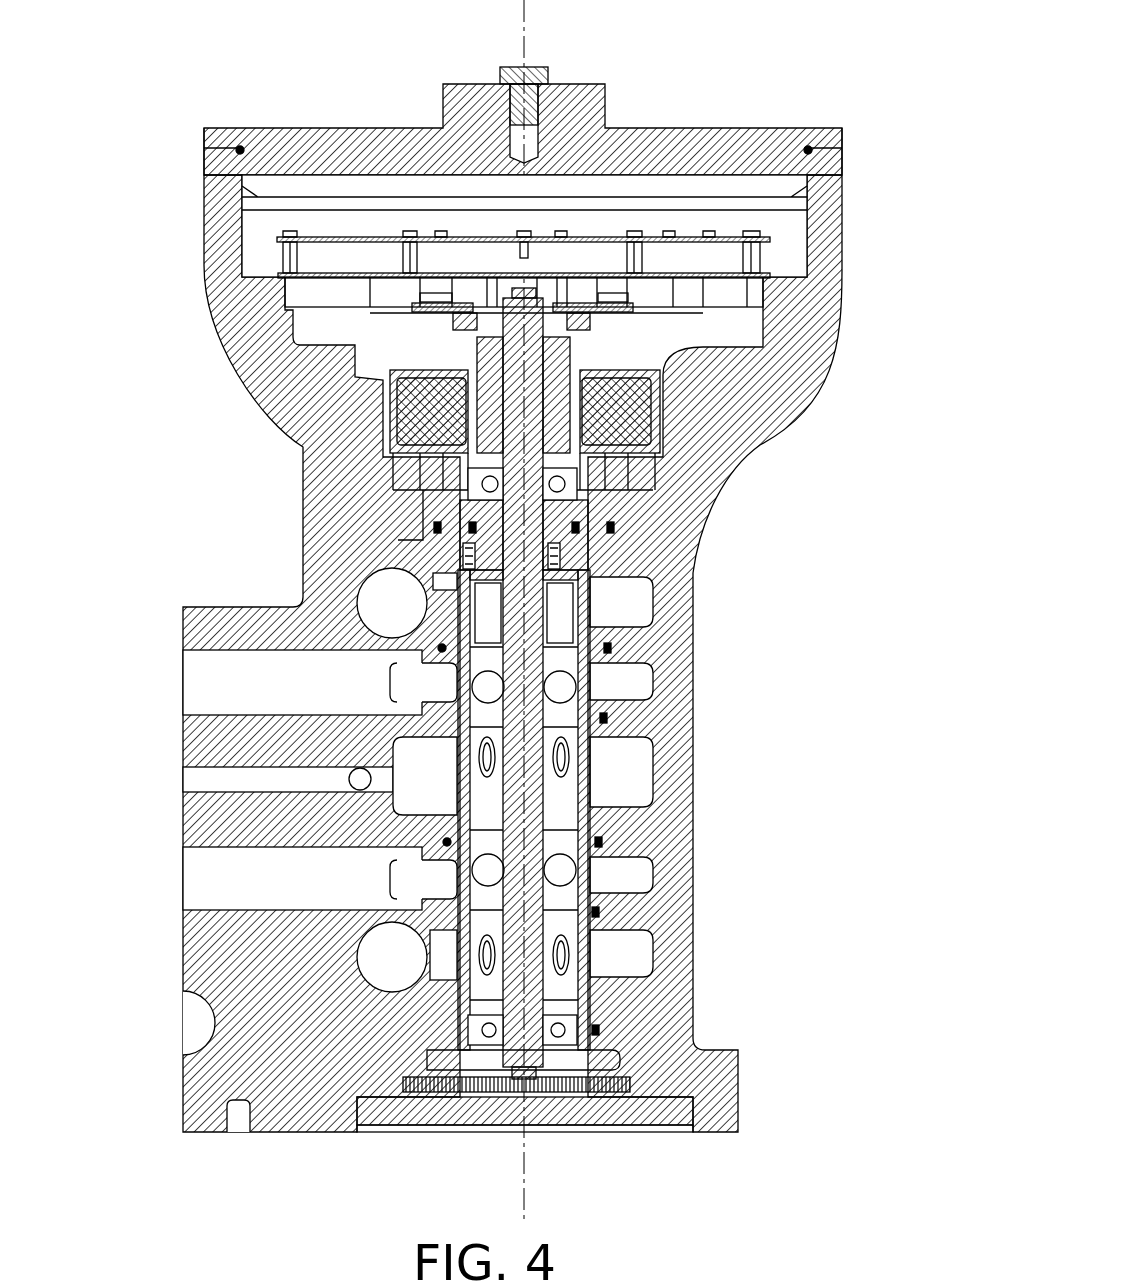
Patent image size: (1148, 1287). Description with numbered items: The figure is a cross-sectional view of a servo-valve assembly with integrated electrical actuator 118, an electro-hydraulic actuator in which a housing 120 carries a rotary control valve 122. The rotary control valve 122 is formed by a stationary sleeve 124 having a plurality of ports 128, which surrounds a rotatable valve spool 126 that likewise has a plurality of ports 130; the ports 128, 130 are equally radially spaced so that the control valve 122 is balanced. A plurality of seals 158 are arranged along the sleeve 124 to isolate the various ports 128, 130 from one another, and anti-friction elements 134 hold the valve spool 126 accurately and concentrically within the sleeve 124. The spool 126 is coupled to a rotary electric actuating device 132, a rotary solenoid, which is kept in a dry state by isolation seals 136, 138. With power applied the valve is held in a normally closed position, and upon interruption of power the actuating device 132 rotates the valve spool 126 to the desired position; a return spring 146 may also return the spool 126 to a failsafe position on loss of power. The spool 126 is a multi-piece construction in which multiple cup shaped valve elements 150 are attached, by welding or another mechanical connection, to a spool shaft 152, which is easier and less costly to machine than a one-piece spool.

The servo-valve assembly with integrated electrical actuator 118 is at (520, 611).
The housing 120 is at (842, 193).
The rotary control valve 122 is at (610, 954).
The stationary sleeve 124 is at (596, 793).
The rotatable valve spool 126 is at (550, 736).
The ports 128 is at (438, 647).
The ports 130 is at (430, 760).
The rotary electric actuating device 132 is at (655, 366).
The anti-friction elements 134 is at (580, 482).
The isolation seal 136 is at (660, 518).
The isolation seal 138 is at (556, 548).
The return spring 146 is at (662, 1099).
The cup shaped valve element 150 is at (490, 605).
The spool shaft 152 is at (503, 625).
The seals 158 is at (610, 648).